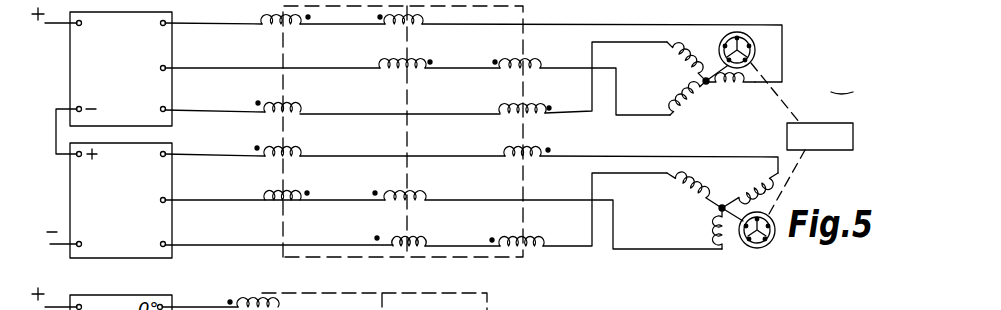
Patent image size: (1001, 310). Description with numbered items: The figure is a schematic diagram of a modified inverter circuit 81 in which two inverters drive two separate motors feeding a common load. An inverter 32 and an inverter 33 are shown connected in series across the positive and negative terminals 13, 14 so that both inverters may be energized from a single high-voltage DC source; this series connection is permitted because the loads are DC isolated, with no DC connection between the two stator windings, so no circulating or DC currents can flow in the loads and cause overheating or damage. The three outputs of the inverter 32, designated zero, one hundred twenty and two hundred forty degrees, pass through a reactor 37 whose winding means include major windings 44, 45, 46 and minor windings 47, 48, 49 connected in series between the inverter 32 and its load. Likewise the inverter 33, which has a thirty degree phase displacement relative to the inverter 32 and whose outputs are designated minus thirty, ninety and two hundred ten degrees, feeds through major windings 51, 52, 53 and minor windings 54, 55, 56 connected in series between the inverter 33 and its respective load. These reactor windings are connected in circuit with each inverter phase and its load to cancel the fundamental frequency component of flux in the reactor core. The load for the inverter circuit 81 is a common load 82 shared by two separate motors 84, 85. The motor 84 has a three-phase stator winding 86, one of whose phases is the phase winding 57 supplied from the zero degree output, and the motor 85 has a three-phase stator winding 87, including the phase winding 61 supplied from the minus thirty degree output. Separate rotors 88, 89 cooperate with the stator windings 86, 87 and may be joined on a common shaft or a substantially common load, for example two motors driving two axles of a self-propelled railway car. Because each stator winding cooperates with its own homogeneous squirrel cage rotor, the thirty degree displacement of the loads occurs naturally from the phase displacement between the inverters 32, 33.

The positive terminal 13 is at (58, 24).
The negative terminal 14 is at (58, 245).
The inverter 32 is at (70, 66).
The inverter 33 is at (70, 197).
The reactor 37 is at (338, 270).
The major winding 44 is at (292, 30).
The major winding 45 is at (420, 71).
The major winding 46 is at (535, 109).
The minor winding 47 is at (295, 112).
The minor winding 48 is at (418, 26).
The minor winding 49 is at (530, 65).
The major winding 51 is at (295, 157).
The major winding 52 is at (421, 202).
The major winding 53 is at (531, 244).
The minor winding 54 is at (293, 202).
The minor winding 55 is at (397, 243).
The minor winding 56 is at (535, 155).
The phase winding 57 is at (726, 85).
The phase winding 61 is at (744, 187).
The inverter circuit 81 is at (845, 81).
The common load 82 is at (823, 150).
The motor 84 is at (798, 56).
The motor 85 is at (770, 259).
The stator winding 86 is at (688, 102).
The stator winding 87 is at (715, 232).
The rotor 88 is at (745, 68).
The rotor 89 is at (757, 247).